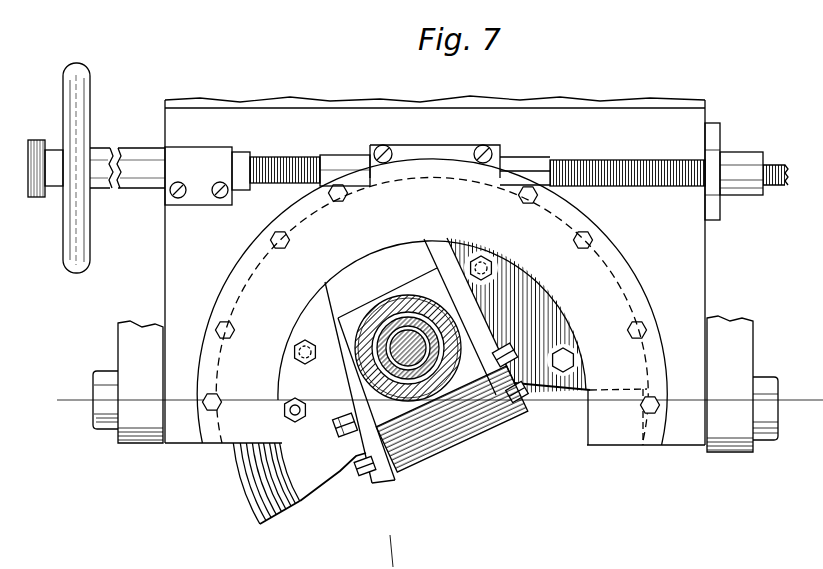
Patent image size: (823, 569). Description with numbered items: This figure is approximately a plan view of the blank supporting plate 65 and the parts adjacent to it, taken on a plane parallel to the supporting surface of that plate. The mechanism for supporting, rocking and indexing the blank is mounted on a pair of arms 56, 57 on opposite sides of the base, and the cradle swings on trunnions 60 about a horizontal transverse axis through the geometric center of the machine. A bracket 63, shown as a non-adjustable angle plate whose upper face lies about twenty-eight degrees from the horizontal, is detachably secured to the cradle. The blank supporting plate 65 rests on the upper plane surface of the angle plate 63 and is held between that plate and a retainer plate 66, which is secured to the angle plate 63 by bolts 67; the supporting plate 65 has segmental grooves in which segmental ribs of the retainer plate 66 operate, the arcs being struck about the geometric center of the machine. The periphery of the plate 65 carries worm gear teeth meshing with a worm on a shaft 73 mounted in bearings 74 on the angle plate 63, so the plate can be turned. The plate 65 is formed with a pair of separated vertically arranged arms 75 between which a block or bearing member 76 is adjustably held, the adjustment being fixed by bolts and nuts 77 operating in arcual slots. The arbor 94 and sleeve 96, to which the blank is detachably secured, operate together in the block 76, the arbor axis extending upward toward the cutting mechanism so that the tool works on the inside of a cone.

The arm 56 is at (727, 417).
The arm 57 is at (130, 415).
The trunnion 60 is at (103, 404).
The bracket 63 is at (180, 279).
The blank supporting plate 65 is at (258, 526).
The retainer plate 66 is at (230, 428).
The bolt 67 is at (200, 413).
The shaft 73 is at (612, 170).
The bearing 74 is at (217, 155).
The arm 75 is at (475, 318).
The block 76 is at (397, 416).
The bolts and nuts 77 is at (340, 440).
The arbor 94 is at (414, 378).
The sleeve 96 is at (352, 212).